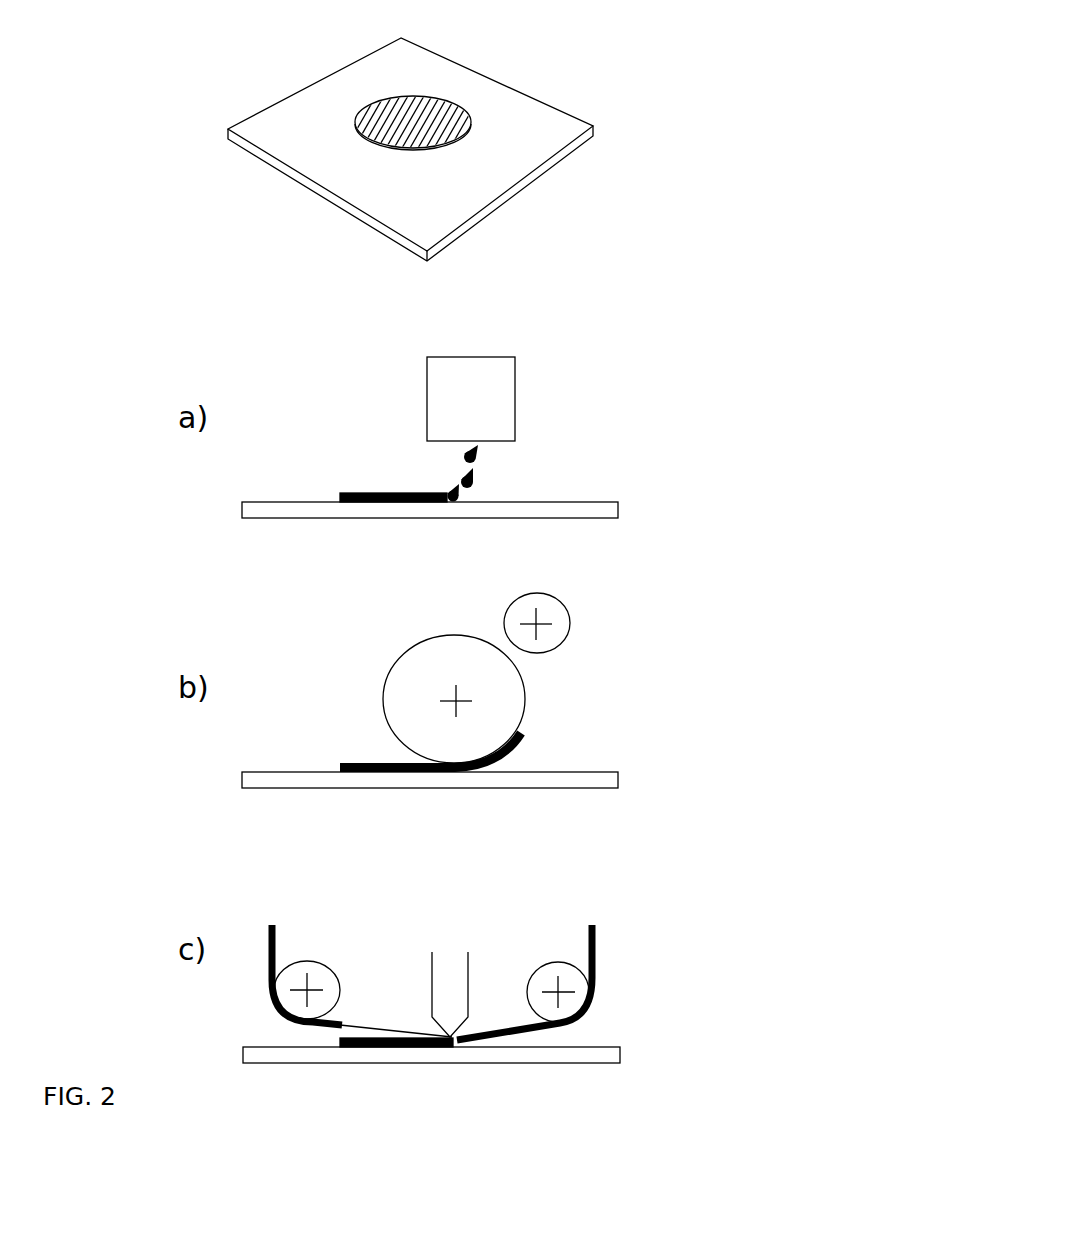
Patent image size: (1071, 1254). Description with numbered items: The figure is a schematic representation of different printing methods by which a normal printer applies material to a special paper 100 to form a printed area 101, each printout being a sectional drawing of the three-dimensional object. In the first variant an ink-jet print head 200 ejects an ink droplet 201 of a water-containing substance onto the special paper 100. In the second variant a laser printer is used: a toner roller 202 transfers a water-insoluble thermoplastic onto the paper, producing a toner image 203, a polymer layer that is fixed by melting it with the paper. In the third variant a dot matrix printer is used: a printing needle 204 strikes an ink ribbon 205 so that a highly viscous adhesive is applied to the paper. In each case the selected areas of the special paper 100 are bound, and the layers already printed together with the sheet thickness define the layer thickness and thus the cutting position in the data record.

The special paper 100 is at (538, 135).
The printed area 101 is at (417, 118).
The ink-jet print head 200 is at (503, 422).
The ink droplet 201 is at (477, 473).
The toner roller 202 is at (558, 620).
The toner image 203 is at (518, 743).
The printing needle 204 is at (452, 967).
The ink ribbon 205 is at (593, 1018).